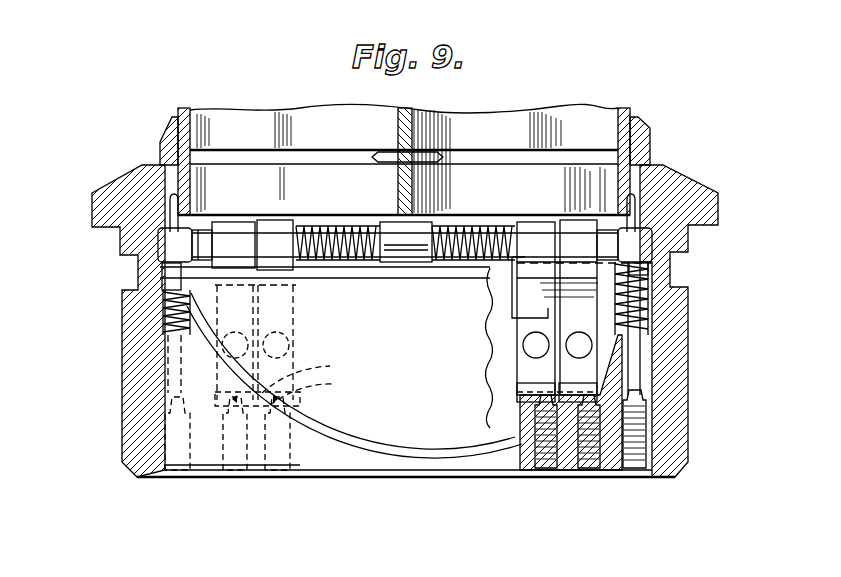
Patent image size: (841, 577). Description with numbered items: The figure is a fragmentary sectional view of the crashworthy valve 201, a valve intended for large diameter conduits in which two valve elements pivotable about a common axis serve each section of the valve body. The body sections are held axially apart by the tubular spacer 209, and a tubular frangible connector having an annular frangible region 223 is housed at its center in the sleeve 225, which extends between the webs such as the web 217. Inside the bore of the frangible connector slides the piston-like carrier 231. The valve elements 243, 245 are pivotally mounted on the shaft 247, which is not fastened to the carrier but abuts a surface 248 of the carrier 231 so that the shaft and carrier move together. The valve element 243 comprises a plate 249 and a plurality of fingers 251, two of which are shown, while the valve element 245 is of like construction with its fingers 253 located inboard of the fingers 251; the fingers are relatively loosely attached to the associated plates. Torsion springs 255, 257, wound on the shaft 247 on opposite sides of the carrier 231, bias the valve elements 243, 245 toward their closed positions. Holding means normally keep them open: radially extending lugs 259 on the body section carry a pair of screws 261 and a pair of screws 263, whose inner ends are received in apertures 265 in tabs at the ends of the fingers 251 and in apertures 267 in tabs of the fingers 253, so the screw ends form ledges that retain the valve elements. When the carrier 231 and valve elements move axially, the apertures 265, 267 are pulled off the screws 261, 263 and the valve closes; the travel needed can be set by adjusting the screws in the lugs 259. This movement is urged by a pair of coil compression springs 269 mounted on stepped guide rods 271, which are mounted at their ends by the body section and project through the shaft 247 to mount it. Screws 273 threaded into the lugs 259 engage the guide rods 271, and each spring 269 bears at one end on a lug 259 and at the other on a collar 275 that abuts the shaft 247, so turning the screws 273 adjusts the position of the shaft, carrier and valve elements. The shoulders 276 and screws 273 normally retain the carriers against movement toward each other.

The crashworthy valve 201 is at (593, 103).
The tubular spacer 209 is at (160, 130).
The web 217 is at (398, 188).
The annular frangible region 223 is at (440, 152).
The sleeve 225 is at (382, 123).
The carrier 231 is at (403, 233).
The valve element 243 is at (353, 447).
The valve element 245 is at (506, 432).
The shaft 247 is at (200, 238).
The surface 248 is at (418, 213).
The plate 249 is at (418, 447).
The fingers 251 is at (238, 238).
The fingers 253 is at (278, 270).
The torsion spring 255 is at (367, 270).
The torsion spring 257 is at (493, 233).
The lugs 259 is at (210, 466).
The screws 261 is at (233, 472).
The screws 263 is at (280, 472).
The apertures 265 is at (306, 370).
The apertures 267 is at (301, 392).
The coil compression springs 269 is at (165, 322).
The stepped guide rods 271 is at (165, 370).
The screws 273 is at (172, 475).
The collar 275 is at (170, 277).
The shoulders 276 is at (172, 260).